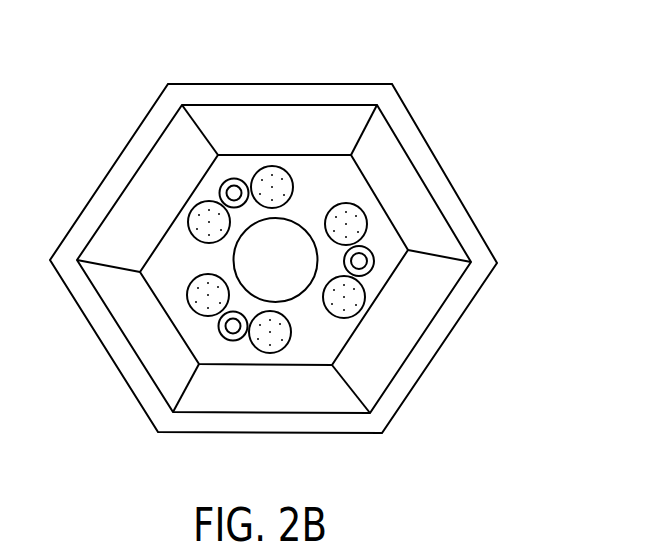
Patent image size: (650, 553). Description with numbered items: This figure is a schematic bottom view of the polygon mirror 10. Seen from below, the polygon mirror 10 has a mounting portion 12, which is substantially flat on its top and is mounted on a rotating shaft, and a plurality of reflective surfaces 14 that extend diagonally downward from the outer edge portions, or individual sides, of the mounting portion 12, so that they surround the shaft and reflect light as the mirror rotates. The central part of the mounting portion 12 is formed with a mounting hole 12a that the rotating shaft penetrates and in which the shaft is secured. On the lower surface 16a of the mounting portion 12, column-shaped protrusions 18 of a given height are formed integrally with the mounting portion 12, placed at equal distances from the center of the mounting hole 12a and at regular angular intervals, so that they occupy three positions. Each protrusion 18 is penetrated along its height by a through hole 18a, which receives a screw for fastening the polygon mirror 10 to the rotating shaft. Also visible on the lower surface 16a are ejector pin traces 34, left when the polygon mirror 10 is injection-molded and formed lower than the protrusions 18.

The polygon mirror 10 is at (309, 68).
The reflective surfaces 14 is at (326, 120).
The lower surface 16a is at (342, 173).
The mounting portion 12 is at (357, 187).
The mounting hole 12a is at (309, 266).
The ejector pin traces 34 is at (270, 343).
The protrusions 18 is at (230, 179).
The through holes 18a is at (233, 333).